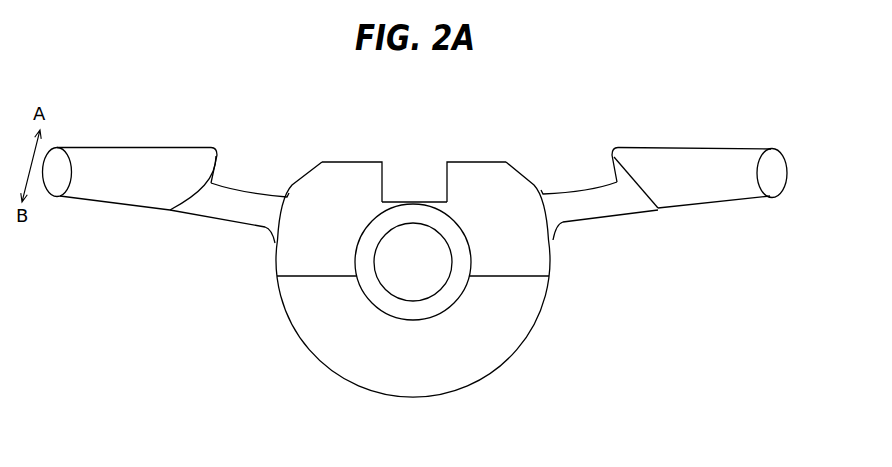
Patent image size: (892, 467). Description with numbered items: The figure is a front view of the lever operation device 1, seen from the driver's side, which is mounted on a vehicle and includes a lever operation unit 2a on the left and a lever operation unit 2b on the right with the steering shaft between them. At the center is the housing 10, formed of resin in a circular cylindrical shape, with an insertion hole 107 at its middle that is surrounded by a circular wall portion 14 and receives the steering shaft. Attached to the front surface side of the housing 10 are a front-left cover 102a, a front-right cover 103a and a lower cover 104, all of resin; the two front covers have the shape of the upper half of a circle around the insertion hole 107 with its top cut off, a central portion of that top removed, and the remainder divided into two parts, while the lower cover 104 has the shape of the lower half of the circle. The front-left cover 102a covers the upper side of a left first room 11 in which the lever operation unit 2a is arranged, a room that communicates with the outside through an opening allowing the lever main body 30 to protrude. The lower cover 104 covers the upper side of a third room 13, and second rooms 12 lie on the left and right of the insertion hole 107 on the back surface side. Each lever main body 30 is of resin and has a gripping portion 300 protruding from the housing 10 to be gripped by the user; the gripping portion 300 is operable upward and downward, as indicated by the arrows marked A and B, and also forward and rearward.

The lever operation device 1 is at (796, 94).
The lever operation unit 2a is at (88, 124).
The lever operation unit 2b is at (742, 132).
The housing 10 is at (511, 165).
The first room 11 is at (303, 178).
The second room 12 is at (524, 181).
The third room 13 is at (282, 297).
The circular wall portion 14 is at (400, 212).
The lever main body 30 is at (110, 205).
The front-left cover 102a is at (348, 177).
The front-right cover 103a is at (468, 177).
The lower cover 104 is at (403, 378).
The insertion hole 107 is at (414, 236).
The gripping portion 300 is at (170, 160).